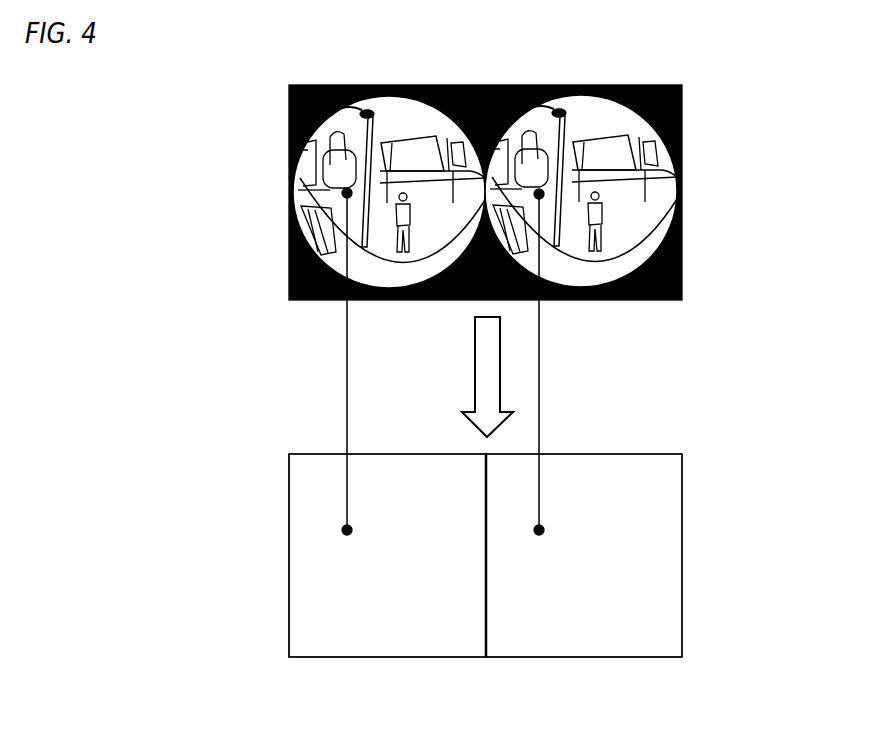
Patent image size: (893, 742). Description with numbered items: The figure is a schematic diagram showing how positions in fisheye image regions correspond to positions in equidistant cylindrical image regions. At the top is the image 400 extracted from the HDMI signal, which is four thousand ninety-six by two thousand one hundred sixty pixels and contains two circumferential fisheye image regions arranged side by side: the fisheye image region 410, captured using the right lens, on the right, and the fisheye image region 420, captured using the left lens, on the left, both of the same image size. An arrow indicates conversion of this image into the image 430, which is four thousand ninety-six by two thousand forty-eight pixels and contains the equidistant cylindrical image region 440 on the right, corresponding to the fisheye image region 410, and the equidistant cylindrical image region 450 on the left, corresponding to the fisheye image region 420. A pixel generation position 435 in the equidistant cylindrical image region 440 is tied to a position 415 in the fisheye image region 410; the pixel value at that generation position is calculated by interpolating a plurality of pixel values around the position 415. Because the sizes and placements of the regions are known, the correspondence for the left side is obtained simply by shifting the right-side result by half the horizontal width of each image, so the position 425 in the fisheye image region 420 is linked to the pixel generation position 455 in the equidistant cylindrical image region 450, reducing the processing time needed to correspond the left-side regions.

The image 400 is at (312, 85).
The fisheye image region 420 is at (400, 103).
The fisheye image region 410 is at (598, 105).
The position 425 is at (347, 193).
The position 415 is at (539, 194).
The image 430 is at (312, 454).
The equidistant cylindrical image region 450 is at (388, 637).
The equidistant cylindrical image region 440 is at (583, 637).
The mapped feature point in left output image 455 is at (347, 530).
The mapped feature point in right output image 435 is at (539, 530).